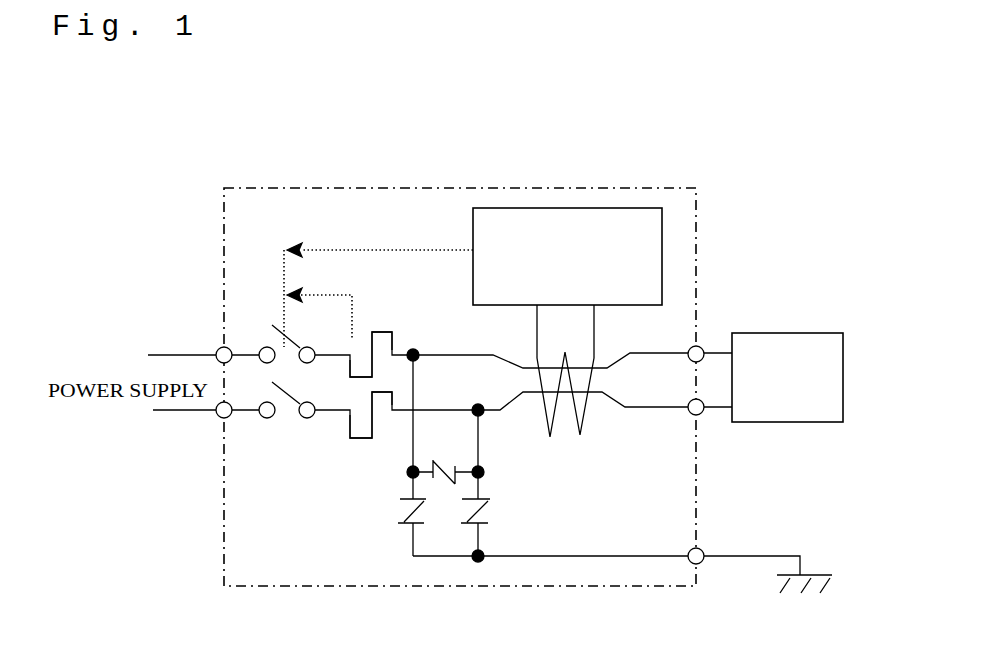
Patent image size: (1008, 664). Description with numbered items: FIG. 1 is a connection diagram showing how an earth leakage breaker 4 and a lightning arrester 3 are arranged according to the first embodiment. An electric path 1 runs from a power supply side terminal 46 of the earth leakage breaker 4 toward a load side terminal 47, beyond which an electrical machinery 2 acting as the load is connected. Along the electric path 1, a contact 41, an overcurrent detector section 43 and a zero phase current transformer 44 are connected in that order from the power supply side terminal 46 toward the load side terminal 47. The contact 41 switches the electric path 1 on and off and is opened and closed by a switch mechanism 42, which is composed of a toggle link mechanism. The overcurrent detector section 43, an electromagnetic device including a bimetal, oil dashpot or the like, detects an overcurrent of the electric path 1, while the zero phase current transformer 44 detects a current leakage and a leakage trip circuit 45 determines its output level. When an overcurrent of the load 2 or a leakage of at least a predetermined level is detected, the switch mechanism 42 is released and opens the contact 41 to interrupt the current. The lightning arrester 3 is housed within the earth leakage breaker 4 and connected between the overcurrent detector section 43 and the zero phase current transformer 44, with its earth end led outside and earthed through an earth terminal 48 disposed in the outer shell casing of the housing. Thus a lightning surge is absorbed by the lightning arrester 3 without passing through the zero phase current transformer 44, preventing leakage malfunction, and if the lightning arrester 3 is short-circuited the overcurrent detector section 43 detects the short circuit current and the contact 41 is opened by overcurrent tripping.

The electric path 1 is at (447, 355).
The electrical machinery 2 is at (796, 333).
The lightning arrester 3 is at (487, 508).
The earth leakage breaker 4 is at (289, 189).
The contact 41 is at (278, 417).
The switch mechanism 42 is at (278, 298).
The overcurrent detector section 43 is at (350, 422).
The zero phase current transformer 44 is at (588, 418).
The leakage trip circuit 45 is at (565, 210).
The power supply side terminal 46 is at (215, 353).
The load side terminal 47 is at (697, 346).
The earth terminal 48 is at (700, 548).